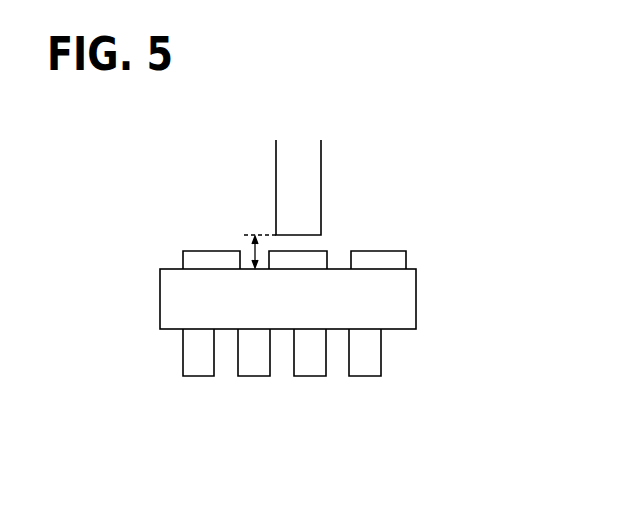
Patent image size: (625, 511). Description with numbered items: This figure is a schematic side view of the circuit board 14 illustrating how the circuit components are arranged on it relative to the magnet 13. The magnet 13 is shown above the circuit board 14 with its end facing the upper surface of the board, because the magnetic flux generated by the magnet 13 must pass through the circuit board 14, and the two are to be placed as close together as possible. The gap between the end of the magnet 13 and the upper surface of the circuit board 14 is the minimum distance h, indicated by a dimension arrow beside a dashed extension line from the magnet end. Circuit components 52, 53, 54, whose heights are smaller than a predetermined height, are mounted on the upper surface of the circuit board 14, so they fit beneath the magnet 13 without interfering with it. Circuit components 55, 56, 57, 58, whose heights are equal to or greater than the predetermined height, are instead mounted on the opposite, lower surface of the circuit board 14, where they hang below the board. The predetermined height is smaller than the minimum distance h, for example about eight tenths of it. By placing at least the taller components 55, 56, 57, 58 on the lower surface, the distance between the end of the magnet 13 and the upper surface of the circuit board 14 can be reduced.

The magnet 13 is at (276, 148).
The circuit board 14 is at (160, 296).
The circuit component 52 is at (205, 251).
The circuit component 53 is at (317, 250).
The circuit component 54 is at (395, 250).
The circuit component 55 is at (195, 377).
The circuit component 56 is at (253, 377).
The circuit component 57 is at (313, 377).
The circuit component 58 is at (367, 377).
The minimum distance h is at (250, 257).